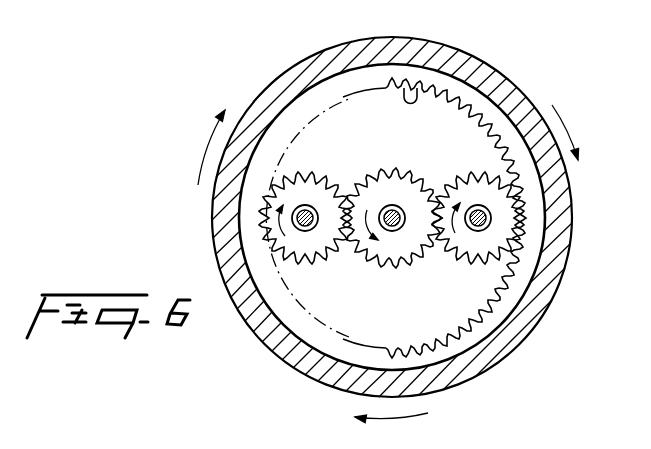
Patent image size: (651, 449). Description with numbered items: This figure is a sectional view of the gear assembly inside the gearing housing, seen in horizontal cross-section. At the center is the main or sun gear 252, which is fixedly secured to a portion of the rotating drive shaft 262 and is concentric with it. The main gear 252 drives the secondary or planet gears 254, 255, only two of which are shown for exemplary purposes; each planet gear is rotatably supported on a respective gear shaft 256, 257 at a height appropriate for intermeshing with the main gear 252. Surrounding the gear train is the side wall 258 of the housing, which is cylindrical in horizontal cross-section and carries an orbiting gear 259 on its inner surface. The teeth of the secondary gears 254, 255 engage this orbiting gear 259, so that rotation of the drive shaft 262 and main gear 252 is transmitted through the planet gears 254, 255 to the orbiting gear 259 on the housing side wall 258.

The main gear 252 is at (398, 242).
The planet gear 254 is at (320, 248).
The planet gear 255 is at (477, 242).
The gear shaft 256 is at (307, 208).
The gear shaft 257 is at (476, 205).
The side wall 258 is at (268, 82).
The orbiting gear 259 is at (409, 94).
The drive shaft 262 is at (392, 205).